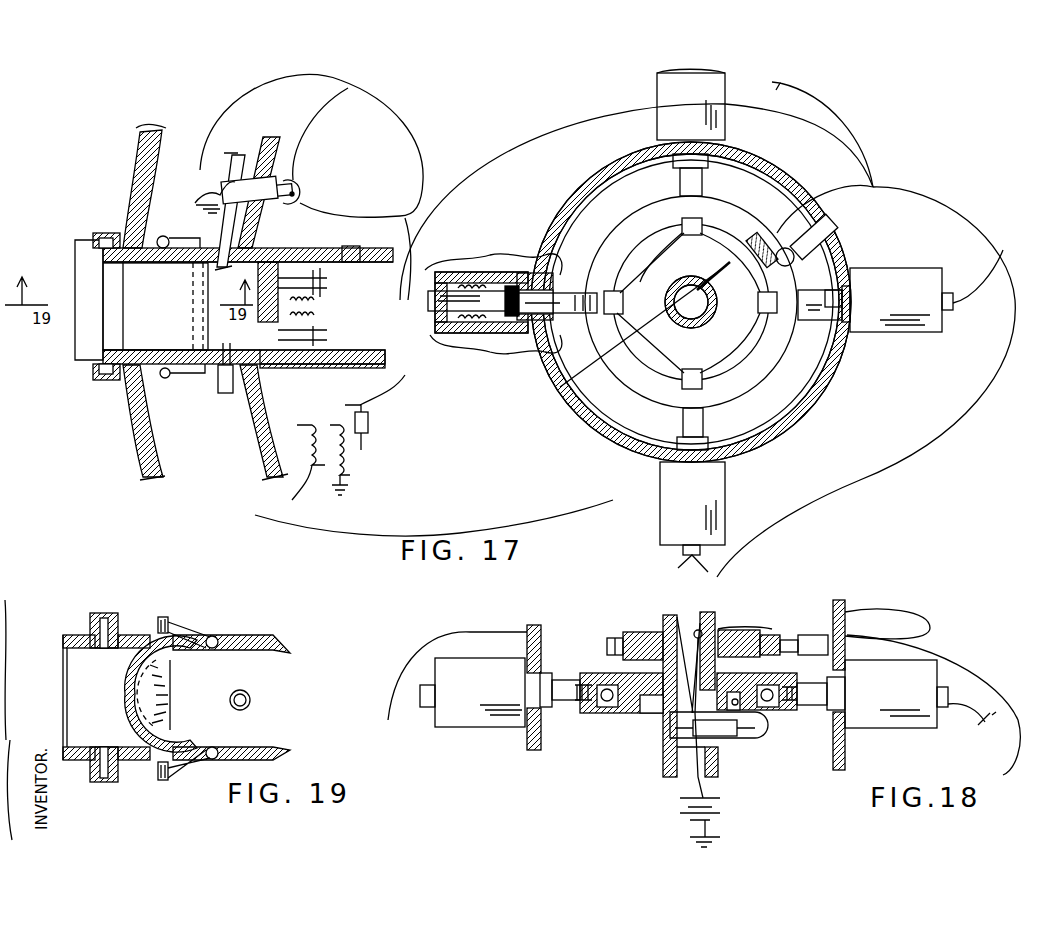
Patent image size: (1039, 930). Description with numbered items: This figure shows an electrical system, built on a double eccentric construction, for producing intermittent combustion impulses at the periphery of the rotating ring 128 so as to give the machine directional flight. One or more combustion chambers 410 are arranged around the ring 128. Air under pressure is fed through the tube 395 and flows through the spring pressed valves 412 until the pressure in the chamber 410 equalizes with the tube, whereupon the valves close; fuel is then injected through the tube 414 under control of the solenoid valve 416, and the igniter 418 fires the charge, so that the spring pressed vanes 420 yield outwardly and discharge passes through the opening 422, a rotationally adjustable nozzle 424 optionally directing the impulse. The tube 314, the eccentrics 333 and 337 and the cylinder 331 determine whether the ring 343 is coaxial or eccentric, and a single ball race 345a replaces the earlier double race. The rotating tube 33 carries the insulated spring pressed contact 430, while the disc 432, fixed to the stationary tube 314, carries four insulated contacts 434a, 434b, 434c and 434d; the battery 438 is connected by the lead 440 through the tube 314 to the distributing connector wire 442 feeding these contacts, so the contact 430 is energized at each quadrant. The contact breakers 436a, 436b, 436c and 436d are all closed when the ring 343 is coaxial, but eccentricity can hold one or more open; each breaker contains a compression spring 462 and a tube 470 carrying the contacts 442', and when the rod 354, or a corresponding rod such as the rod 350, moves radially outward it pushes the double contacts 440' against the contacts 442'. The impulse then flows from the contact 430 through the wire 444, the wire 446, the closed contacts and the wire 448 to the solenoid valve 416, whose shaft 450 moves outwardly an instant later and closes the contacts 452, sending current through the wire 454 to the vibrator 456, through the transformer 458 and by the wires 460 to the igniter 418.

In FIG. 17, the ring 128 is at (135, 190).
In FIG. 17, the opening 422 is at (100, 300).
In FIG. 19, the opening 422 is at (77, 687).
In FIG. 17, the rotationally adjustable nozzle 424 is at (80, 385).
In FIG. 19, the rotationally adjustable nozzle 424 is at (80, 613).
In FIG. 17, the solenoid valve 416 is at (247, 160).
In FIG. 17, the tube 414 is at (200, 218).
In FIG. 17, the contacts 452 is at (298, 200).
In FIG. 17, the shaft 450 is at (255, 203).
In FIG. 17, the spring pressed valves 412 is at (278, 262).
In FIG. 17, the igniter 418 is at (238, 330).
In FIG. 17, the combustion chamber 410 is at (210, 390).
In FIG. 19, the combustion chamber 410 is at (212, 672).
In FIG. 17, the wires 460 is at (310, 408).
In FIG. 17, the vibrator 456 is at (372, 452).
In FIG. 17, the transformer 458 is at (325, 500).
In FIG. 17, the tube 395 is at (374, 390).
In FIG. 17, the wire 448 is at (403, 104).
In FIG. 17, the wire 446 is at (478, 140).
In FIG. 17, the wire 444 is at (827, 190).
In FIG. 17, the tube 314 is at (580, 385).
In FIG. 18, the tube 314 is at (708, 613).
In FIG. 17, the disc 432 is at (722, 250).
In FIG. 18, the disc 432 is at (645, 632).
In FIG. 17, the insulated contact 434a is at (768, 313).
In FIG. 17, the insulated contact 434b is at (690, 225).
In FIG. 17, the insulated contact 434c is at (606, 314).
In FIG. 17, the insulated contact 434d is at (692, 388).
In FIG. 17, the distributing connector wire 442 is at (645, 310).
In FIG. 17, the insulated spring pressed contact 430 is at (772, 247).
In FIG. 17, the rotating tube 33 is at (830, 247).
In FIG. 18, the rotating tube 33 is at (838, 600).
In FIG. 17, the contact breaker 436a is at (870, 340).
In FIG. 17, the contact breaker 436b is at (718, 92).
In FIG. 17, the contact breaker 436c is at (475, 270).
In FIG. 17, the contact breaker 436d is at (725, 490).
In FIG. 17, the double contacts 440' is at (512, 263).
In FIG. 17, the contacts 442' is at (508, 264).
In FIG. 17, the wire 454 is at (420, 378).
In FIG. 17, the tube 470 is at (460, 337).
In FIG. 17, the compression spring 462 is at (490, 340).
In FIG. 18, the single ball race 345a is at (600, 710).
In FIG. 18, the lead 440 is at (675, 605).
In FIG. 18, the rod 354 is at (560, 680).
In FIG. 18, the eccentric 337 is at (610, 674).
In FIG. 18, the eccentric 333 is at (612, 713).
In FIG. 18, the ring 343 is at (777, 711).
In FIG. 18, the rod 350 is at (808, 683).
In FIG. 18, the cylinder 331 is at (735, 742).
In FIG. 18, the battery 438 is at (680, 806).
In FIG. 19, the spring pressed vanes 420 is at (125, 687).